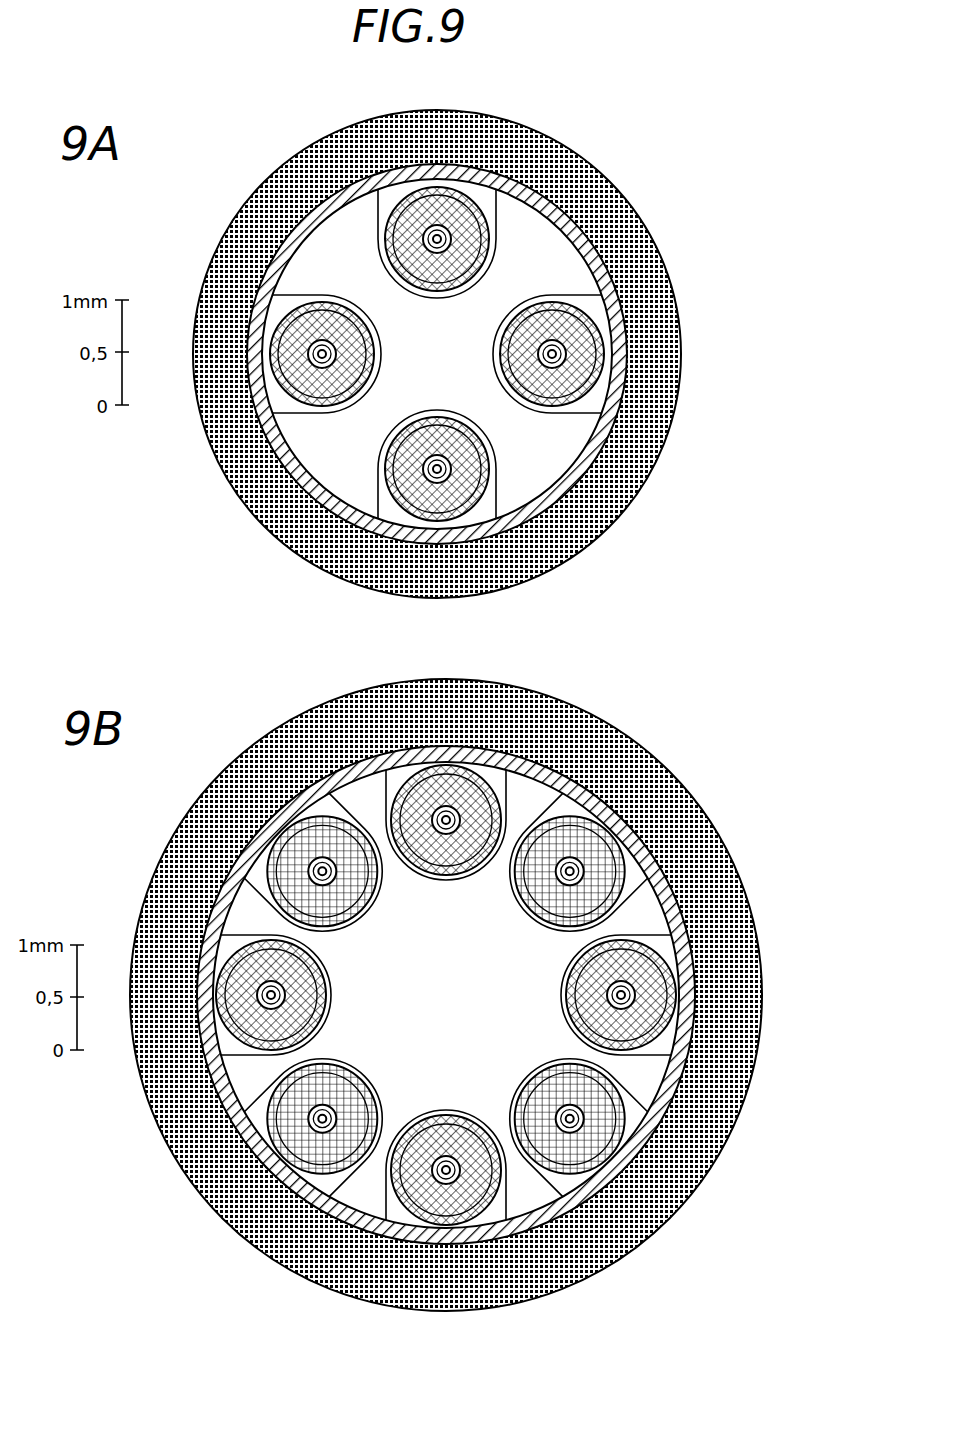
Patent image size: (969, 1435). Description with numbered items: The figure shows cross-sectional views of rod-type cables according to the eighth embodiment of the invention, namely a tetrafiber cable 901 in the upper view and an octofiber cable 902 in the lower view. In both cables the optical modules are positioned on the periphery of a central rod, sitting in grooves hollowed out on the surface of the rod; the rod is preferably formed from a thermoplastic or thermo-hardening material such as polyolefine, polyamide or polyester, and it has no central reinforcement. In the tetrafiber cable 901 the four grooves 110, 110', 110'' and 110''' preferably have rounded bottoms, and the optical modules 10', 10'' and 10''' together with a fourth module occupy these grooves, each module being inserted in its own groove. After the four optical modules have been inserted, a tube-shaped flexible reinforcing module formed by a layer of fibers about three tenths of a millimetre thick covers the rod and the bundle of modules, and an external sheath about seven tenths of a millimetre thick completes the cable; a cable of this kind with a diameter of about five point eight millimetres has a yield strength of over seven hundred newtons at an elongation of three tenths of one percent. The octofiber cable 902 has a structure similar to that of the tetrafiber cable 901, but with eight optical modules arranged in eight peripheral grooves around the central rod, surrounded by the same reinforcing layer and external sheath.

The optical module 10' is at (288, 284).
The optical module 10'' is at (368, 498).
The optical module 10''' is at (622, 377).
The groove 110 is at (426, 179).
The groove 110' is at (260, 377).
The groove 110'' is at (529, 495).
The groove 110''' is at (633, 345).
The tetrafiber cable 901 is at (185, 503).
The octofiber cable 902 is at (170, 1223).